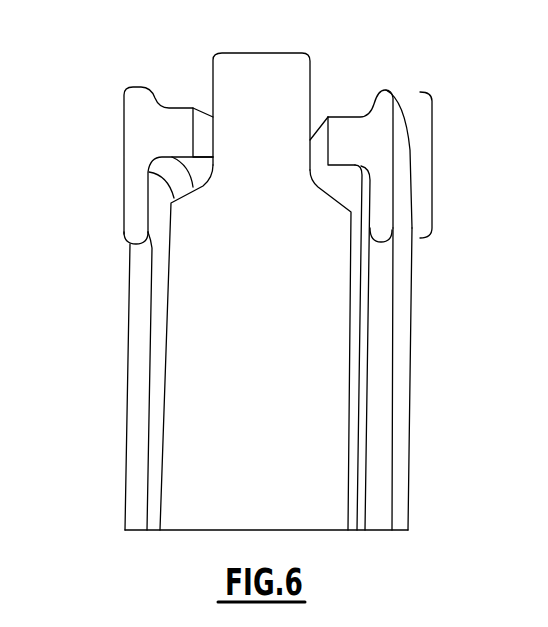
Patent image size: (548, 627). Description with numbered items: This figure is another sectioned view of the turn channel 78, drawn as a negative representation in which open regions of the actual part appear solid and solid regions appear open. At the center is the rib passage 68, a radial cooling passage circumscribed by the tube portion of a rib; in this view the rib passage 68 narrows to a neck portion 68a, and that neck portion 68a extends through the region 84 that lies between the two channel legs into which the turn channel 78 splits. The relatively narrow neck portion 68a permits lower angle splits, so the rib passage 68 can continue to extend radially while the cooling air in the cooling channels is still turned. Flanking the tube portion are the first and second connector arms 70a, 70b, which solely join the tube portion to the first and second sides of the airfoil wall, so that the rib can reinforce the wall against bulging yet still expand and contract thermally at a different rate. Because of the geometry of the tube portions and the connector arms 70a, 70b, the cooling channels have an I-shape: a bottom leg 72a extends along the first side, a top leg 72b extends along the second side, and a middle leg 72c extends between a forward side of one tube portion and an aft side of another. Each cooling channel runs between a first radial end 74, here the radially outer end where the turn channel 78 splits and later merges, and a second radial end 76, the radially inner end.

The rib passage 68 is at (308, 306).
The neck portion 68a is at (296, 82).
The region 84 is at (321, 112).
The bottom leg of the cooling channel 72b is at (131, 192).
The bottom leg of the cooling channel 72a is at (390, 187).
The middle leg of the cooling channel 72c is at (362, 361).
The first cooling channel radial end 74 is at (131, 241).
The second cooling channel radial end 76 is at (383, 244).
The first connector arm 70a is at (392, 264).
The second connector arm 70b is at (140, 315).
The turn channel 78 is at (432, 163).